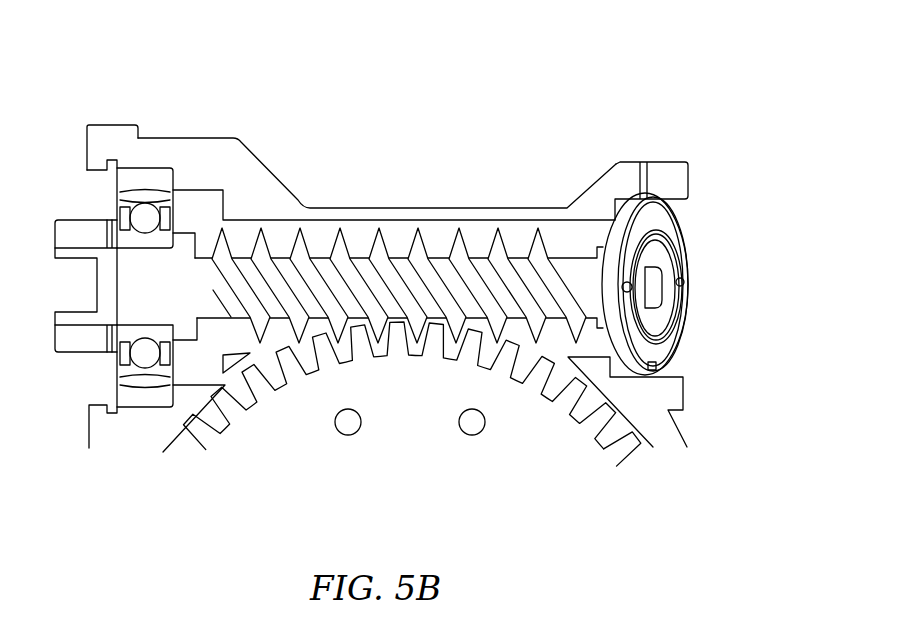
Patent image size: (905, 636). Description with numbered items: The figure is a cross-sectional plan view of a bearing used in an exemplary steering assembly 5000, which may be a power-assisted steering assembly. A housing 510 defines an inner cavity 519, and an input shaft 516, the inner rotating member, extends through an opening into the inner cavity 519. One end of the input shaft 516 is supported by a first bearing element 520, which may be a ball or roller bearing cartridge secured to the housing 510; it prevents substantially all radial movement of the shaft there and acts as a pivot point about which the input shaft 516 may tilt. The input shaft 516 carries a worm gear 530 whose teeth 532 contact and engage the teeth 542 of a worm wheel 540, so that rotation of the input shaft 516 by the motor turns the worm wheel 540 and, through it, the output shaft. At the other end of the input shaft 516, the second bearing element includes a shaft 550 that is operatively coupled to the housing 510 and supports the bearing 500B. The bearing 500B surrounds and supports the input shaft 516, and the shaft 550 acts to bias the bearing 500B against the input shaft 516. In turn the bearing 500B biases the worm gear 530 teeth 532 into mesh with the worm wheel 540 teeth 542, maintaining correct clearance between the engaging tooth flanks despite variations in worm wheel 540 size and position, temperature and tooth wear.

The steering assembly 5000 is at (654, 76).
The first bearing element 520 is at (165, 165).
The input shaft 516 is at (228, 192).
The teeth 532 is at (300, 228).
The worm gear 530 is at (413, 250).
The housing 510 is at (415, 207).
The inner cavity 519 is at (483, 232).
The shaft 550 is at (657, 165).
The bearing 500B is at (683, 222).
The worm wheel 540 is at (400, 386).
The teeth 542 is at (633, 458).